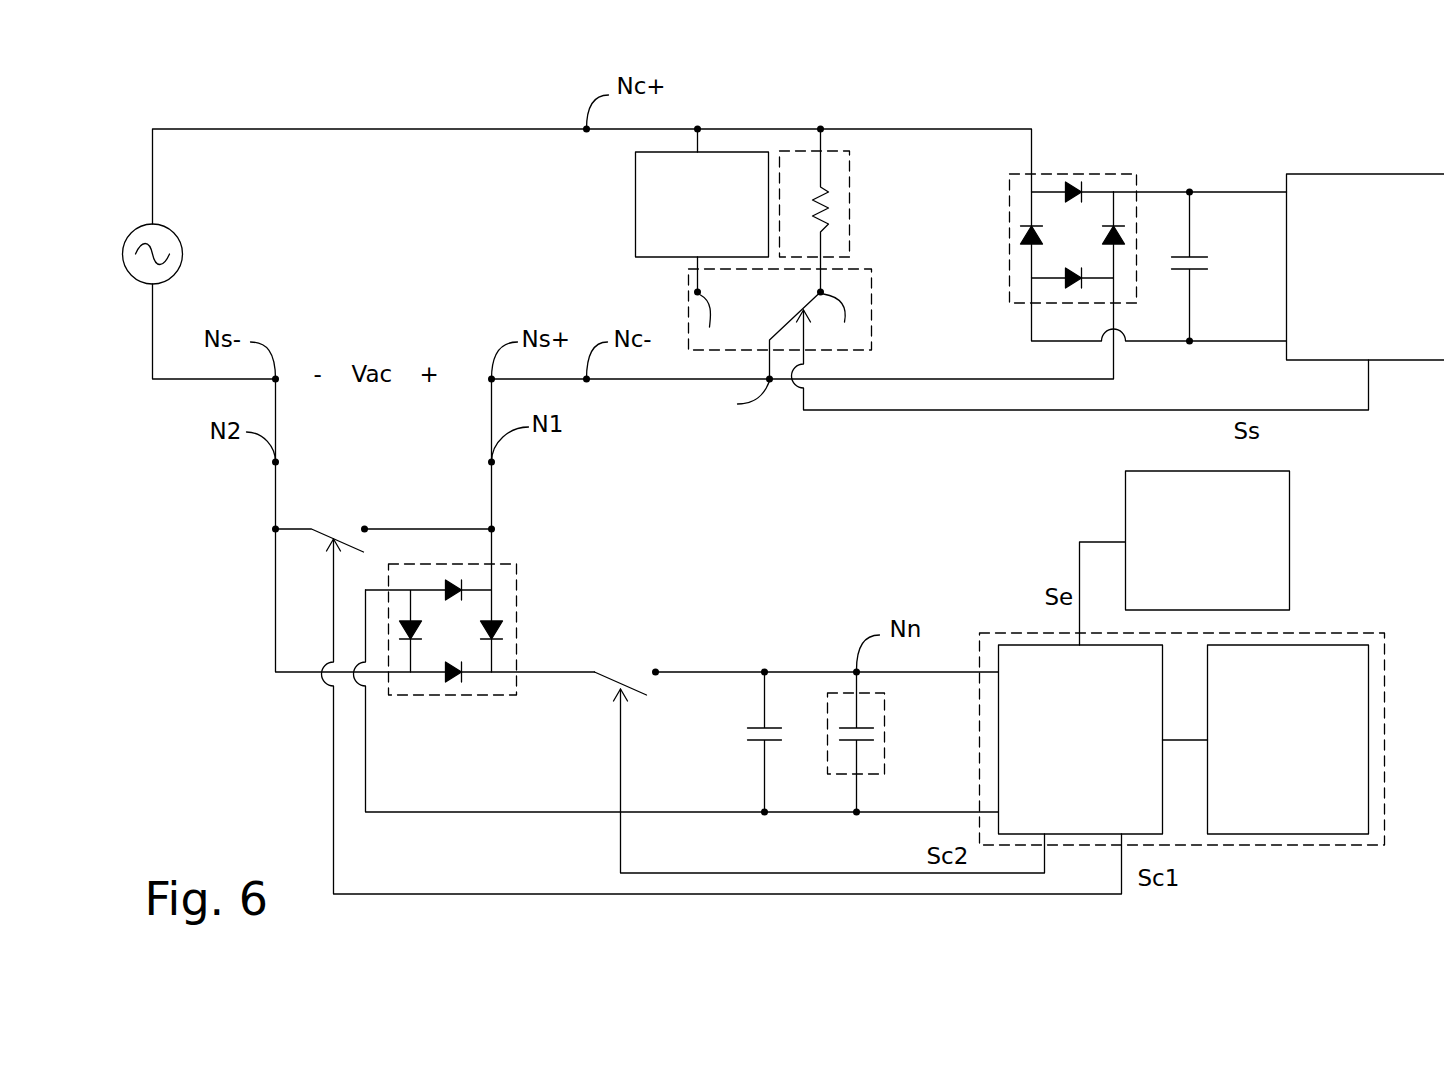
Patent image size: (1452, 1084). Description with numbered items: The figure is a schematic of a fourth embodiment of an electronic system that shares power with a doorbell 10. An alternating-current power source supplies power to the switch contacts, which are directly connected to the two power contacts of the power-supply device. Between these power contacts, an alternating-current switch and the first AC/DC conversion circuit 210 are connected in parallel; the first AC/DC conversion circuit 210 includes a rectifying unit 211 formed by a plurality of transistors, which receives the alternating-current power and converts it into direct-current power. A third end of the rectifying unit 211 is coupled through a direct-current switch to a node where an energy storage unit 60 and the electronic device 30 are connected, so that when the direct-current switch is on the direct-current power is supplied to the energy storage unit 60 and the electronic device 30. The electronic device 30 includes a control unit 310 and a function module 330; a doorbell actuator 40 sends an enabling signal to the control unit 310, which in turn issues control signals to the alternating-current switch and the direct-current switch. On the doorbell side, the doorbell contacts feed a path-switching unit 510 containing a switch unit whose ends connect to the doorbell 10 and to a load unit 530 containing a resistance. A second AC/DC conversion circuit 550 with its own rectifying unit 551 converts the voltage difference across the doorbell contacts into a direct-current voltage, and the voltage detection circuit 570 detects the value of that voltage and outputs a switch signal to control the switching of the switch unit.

The doorbell 10 is at (713, 232).
The electronic device 30 is at (1182, 713).
The doorbell actuator 40 is at (1221, 591).
The energy storage unit 60 is at (884, 740).
The first AC/DC conversion circuit 210 is at (676, 677).
The rectifying unit 211 is at (513, 582).
The control unit 310 is at (1102, 788).
The function module 330 is at (1288, 739).
The path-switching unit 510 is at (954, 343).
The load unit 530 is at (857, 210).
The second AC/DC conversion circuit 550 is at (1124, 235).
The rectifying unit 551 is at (1075, 172).
The voltage detection circuit 570 is at (1387, 332).